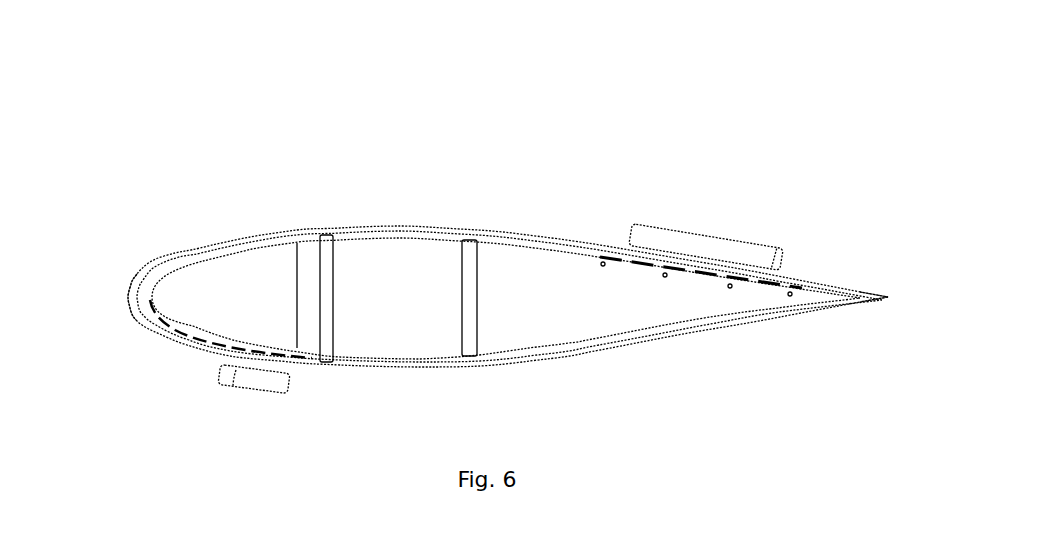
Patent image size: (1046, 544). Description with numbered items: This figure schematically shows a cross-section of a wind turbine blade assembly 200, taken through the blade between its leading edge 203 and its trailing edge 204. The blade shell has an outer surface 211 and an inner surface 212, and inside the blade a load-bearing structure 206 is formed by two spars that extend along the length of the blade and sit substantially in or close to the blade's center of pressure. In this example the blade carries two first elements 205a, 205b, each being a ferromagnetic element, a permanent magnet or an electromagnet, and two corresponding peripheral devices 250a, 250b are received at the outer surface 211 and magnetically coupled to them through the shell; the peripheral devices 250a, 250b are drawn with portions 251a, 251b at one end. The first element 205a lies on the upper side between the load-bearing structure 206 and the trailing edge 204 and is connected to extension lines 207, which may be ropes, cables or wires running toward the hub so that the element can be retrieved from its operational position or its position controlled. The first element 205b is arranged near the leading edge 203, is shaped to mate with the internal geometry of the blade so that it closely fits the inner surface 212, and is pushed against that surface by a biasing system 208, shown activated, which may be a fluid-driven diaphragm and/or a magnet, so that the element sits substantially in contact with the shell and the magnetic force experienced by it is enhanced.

The wind turbine blade assembly 200 is at (250, 190).
The leading edge 203 is at (130, 297).
The trailing edge 204 is at (890, 297).
The first element 205a is at (597, 250).
The first element 205b is at (157, 316).
The load-bearing structure 206 is at (330, 294).
The extension lines 207 is at (663, 276).
The biasing system 208 is at (232, 256).
The outer surface 211 is at (382, 227).
The inner surface 212 is at (418, 358).
The peripheral device 250a is at (720, 237).
The peripheral device 250b is at (293, 388).
The connector (upper) 251a is at (784, 249).
The connector (lower) 251b is at (237, 387).